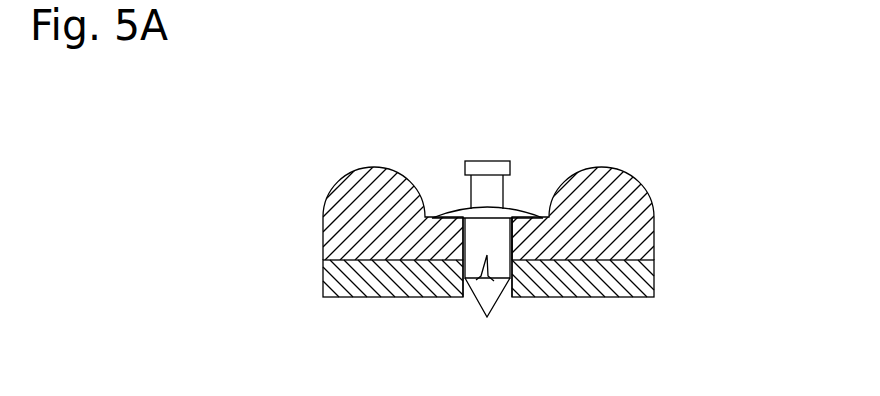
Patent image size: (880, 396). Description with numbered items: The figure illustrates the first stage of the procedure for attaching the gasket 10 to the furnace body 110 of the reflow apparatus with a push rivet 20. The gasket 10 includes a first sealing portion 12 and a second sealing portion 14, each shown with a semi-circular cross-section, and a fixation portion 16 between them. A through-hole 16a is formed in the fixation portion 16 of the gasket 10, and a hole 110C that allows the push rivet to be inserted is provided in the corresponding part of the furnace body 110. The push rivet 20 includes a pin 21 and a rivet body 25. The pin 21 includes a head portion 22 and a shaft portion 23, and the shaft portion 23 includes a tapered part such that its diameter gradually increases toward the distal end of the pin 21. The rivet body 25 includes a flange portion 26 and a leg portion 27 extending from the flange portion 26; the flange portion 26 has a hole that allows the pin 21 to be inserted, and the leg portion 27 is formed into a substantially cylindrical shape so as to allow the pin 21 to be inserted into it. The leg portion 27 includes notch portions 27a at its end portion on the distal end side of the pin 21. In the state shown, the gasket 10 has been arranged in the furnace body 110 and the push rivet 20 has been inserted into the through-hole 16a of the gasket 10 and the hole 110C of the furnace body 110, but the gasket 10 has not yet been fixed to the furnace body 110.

The gasket 10 is at (452, 250).
The first sealing portion 12 is at (337, 192).
The second sealing portion 14 is at (647, 190).
The fixation portion 16 is at (537, 220).
The through-hole 16a is at (513, 250).
The furnace body 110 is at (323, 290).
The hole 110C is at (462, 283).
The push rivet 20 is at (462, 217).
The pin 21 is at (509, 145).
The head portion 22 is at (497, 165).
The shaft portion 23 is at (498, 190).
The rivet body 25 is at (440, 205).
The flange portion 26 is at (453, 212).
The leg portion 27 is at (465, 250).
The notch portions 27a is at (486, 283).